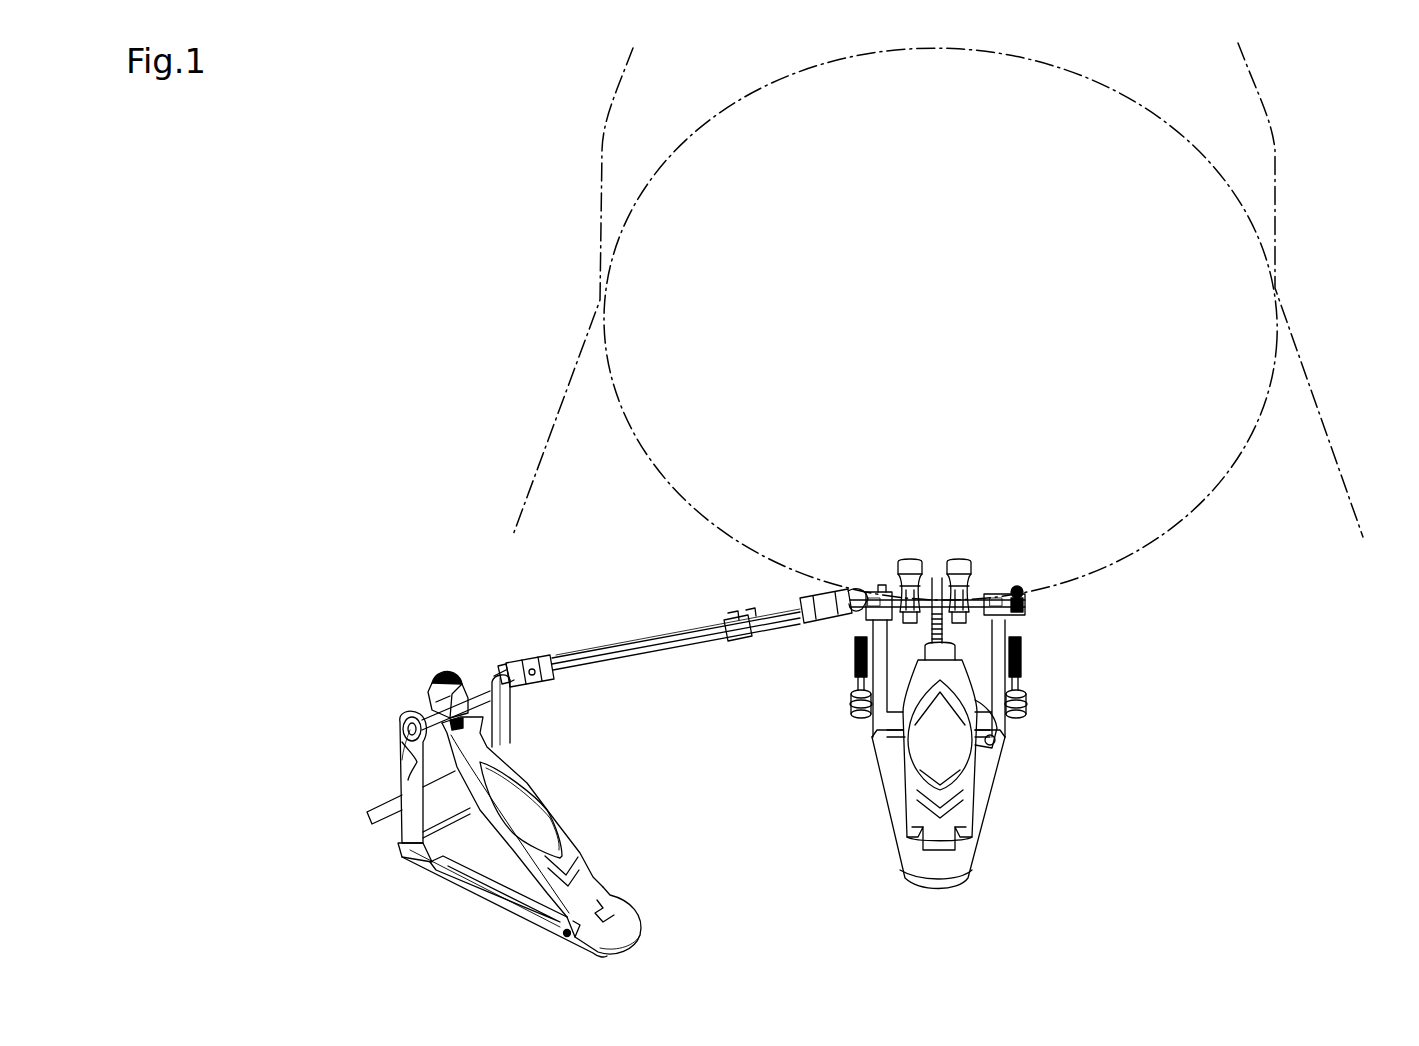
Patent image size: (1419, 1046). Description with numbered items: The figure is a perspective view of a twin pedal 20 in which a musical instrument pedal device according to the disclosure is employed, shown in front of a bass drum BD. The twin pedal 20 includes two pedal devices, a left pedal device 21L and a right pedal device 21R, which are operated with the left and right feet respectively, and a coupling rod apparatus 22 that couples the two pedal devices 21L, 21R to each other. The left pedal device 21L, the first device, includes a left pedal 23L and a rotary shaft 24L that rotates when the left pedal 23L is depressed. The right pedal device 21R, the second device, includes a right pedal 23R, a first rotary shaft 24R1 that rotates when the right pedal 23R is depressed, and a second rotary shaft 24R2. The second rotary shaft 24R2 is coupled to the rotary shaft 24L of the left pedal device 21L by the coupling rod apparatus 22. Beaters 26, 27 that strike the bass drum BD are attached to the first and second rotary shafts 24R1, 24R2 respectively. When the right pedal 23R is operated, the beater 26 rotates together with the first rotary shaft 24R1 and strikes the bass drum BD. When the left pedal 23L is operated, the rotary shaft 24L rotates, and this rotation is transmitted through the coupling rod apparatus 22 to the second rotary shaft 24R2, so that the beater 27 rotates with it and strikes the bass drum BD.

The bass drum BD is at (1277, 167).
The twin pedal 20 is at (417, 617).
The left pedal device 21L is at (400, 732).
The right pedal device 21R is at (1026, 603).
The coupling rod apparatus 22 is at (636, 641).
The left pedal 23L is at (540, 812).
The right pedal 23R is at (950, 752).
The rotary shaft 24L is at (480, 680).
The first rotary shaft 24R1 is at (986, 600).
The second rotary shaft 24R2 is at (873, 600).
The beater 26 is at (958, 560).
The beater 27 is at (910, 560).